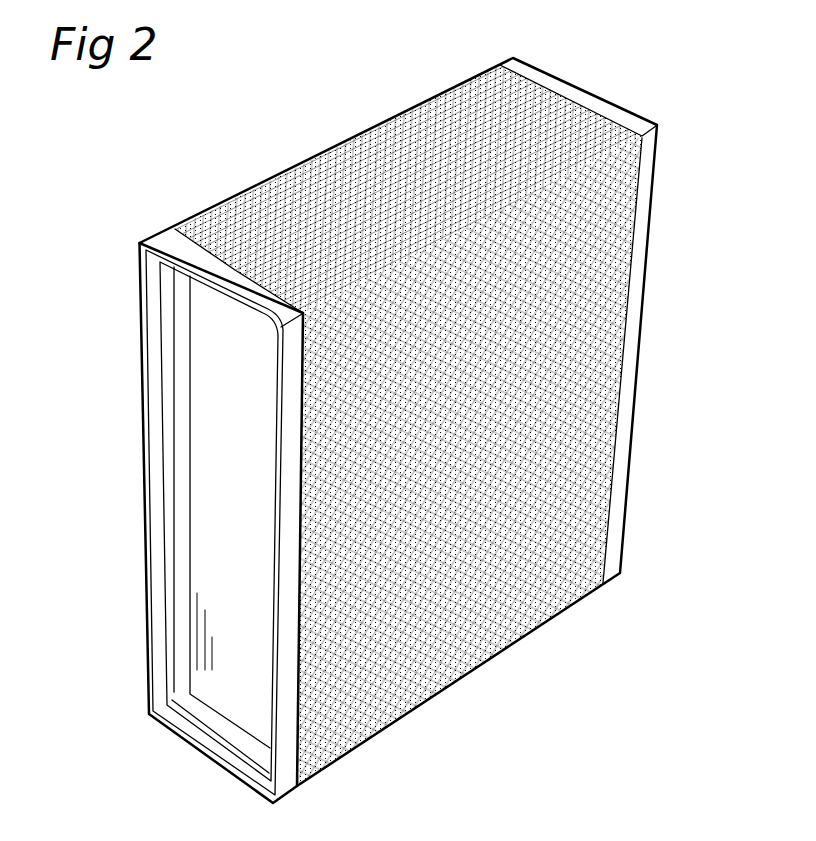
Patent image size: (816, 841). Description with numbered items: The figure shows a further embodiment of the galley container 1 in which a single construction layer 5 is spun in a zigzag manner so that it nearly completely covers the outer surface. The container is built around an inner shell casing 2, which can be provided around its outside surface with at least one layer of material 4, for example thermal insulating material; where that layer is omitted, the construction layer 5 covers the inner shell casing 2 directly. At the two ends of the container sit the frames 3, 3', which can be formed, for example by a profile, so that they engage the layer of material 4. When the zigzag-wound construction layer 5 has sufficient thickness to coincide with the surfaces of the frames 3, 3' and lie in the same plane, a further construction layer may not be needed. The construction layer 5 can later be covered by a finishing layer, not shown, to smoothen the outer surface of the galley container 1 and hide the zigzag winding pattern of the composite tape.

The galley container 1 is at (618, 54).
The inner shell casing 2 is at (207, 562).
The frame 3 is at (199, 512).
The frame 3' is at (578, 83).
The layer of material 4 is at (337, 743).
The construction layer 5 is at (585, 505).